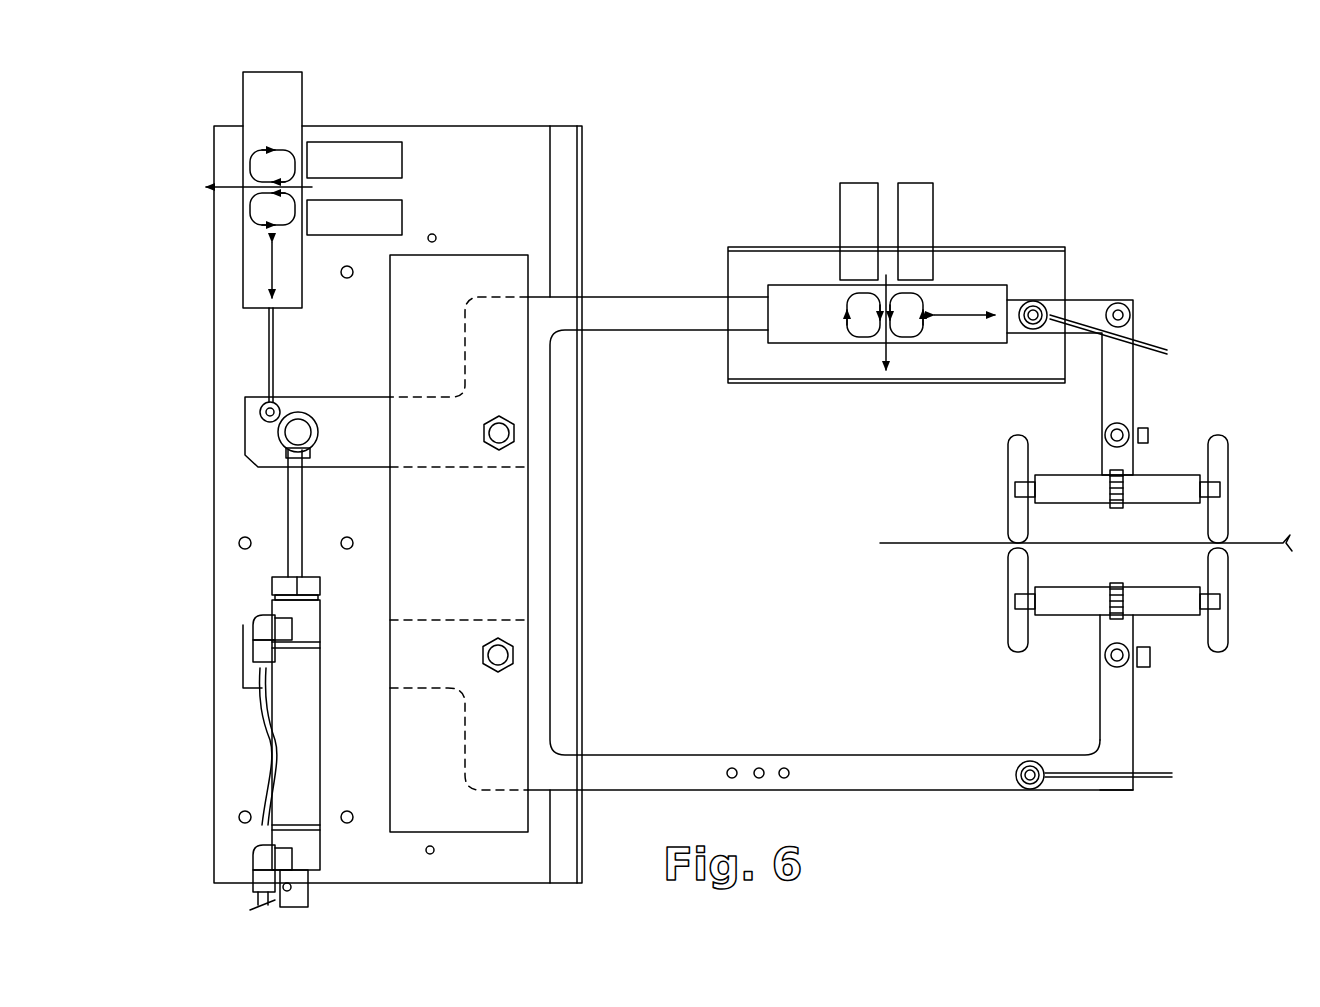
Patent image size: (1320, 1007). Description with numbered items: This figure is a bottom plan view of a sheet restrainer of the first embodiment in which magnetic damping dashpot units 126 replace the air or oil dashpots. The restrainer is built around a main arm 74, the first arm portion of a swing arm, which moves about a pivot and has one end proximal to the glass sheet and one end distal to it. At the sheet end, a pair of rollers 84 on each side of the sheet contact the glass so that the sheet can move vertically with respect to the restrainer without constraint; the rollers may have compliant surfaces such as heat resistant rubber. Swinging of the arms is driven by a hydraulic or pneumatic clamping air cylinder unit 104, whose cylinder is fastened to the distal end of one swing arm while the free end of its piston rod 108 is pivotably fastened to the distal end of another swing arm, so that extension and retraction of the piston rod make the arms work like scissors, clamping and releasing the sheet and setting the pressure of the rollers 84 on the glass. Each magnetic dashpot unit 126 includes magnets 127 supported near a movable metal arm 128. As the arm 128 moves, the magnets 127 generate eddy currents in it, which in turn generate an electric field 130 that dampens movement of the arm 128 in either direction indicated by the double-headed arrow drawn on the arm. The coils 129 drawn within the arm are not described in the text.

The main arm 74 is at (645, 320).
The rollers 84 is at (1020, 460).
The clamping air cylinder unit 104 is at (307, 768).
The piston rod 108 is at (295, 520).
The magnetic damping dashpot unit 126 is at (342, 110).
The magnets 127 is at (376, 140).
The movable metal arm 128 is at (270, 92).
The coils 129 is at (262, 155).
The electric field 130 is at (237, 183).